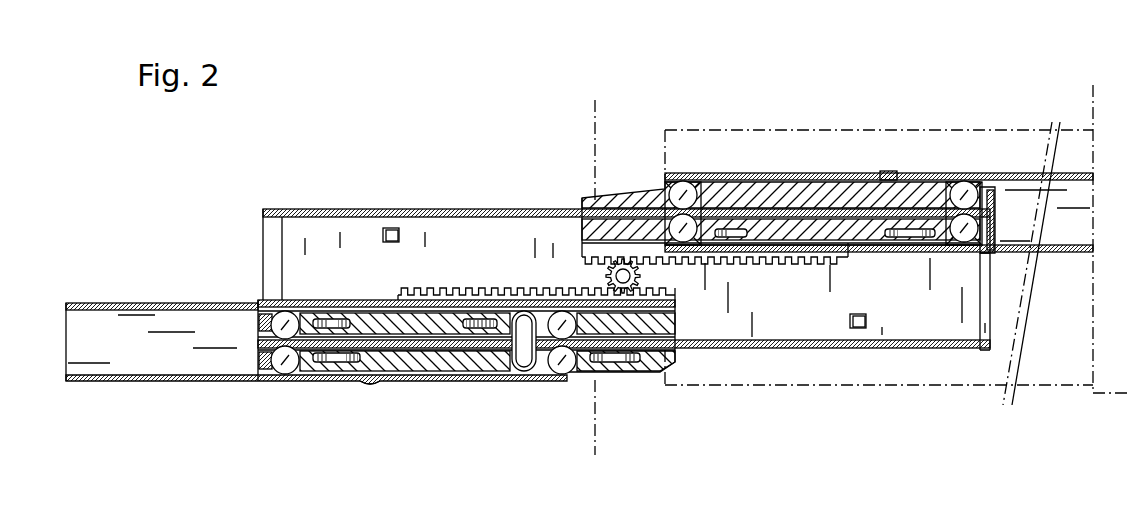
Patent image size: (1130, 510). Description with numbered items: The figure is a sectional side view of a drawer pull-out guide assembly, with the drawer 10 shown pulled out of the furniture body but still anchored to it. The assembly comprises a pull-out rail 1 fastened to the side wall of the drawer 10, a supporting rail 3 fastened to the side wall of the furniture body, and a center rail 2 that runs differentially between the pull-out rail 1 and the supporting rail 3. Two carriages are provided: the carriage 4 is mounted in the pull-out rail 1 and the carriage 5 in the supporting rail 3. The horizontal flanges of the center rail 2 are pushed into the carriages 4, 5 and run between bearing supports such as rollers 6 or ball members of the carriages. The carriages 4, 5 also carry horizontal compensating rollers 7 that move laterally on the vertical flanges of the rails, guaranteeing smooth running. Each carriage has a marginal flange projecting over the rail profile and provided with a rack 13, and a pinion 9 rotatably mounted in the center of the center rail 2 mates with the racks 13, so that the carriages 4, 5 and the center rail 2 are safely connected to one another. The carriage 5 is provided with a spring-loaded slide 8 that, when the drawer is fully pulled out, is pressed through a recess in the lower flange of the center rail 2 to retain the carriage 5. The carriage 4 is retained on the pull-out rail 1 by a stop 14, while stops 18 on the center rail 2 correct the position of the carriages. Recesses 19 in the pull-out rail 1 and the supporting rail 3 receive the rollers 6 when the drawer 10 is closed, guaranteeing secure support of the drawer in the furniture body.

The pull-out rail 1 is at (1083, 228).
The center rail 2 is at (503, 235).
The supporting rail 3 is at (180, 388).
The carriage 4 is at (830, 198).
The carriage 5 is at (443, 372).
The rollers 6 is at (277, 374).
The horizontal compensating rollers 7 is at (340, 362).
The slide 8 is at (526, 372).
The pinion 9 is at (618, 262).
The drawer 10 is at (935, 143).
The rack 13 is at (458, 286).
The stop 14 is at (664, 190).
The stops 18 is at (391, 227).
The recesses 19 is at (365, 384).